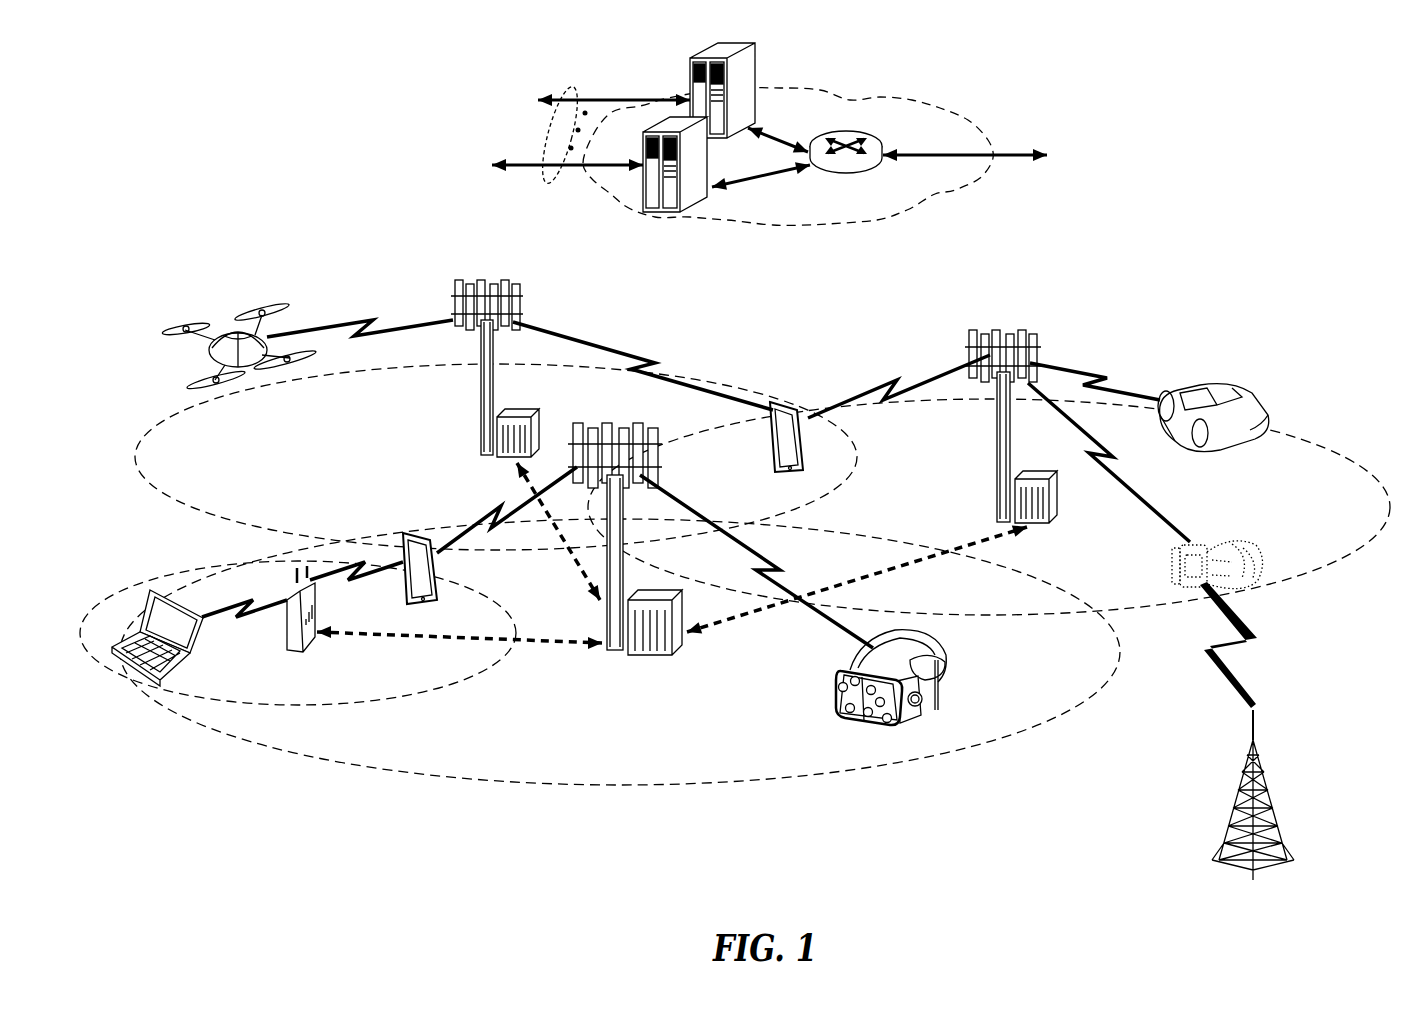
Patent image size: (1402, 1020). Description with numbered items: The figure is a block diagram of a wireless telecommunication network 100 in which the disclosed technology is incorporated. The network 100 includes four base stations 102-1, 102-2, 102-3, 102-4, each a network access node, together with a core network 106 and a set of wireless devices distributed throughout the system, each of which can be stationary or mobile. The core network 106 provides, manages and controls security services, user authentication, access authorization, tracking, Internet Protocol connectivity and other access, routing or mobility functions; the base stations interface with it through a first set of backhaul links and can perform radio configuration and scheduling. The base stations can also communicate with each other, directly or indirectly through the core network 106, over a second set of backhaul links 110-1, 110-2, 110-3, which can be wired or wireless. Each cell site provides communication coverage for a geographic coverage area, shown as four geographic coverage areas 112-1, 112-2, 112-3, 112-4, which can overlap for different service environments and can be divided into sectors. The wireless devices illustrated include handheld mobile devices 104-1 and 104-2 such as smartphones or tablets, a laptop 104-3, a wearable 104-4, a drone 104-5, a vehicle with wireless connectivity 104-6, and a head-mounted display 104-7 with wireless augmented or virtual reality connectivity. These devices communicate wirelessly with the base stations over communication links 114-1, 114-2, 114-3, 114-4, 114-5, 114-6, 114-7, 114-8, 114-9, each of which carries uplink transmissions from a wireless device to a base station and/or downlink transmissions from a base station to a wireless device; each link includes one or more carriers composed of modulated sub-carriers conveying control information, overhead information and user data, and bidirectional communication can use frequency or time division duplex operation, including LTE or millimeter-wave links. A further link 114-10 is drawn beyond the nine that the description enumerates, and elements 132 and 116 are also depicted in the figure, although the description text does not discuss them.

The wireless telecommunication network 100 is at (1285, 148).
The antenna / beam 132 is at (549, 172).
The core network 106 is at (876, 220).
The base station 102-1 is at (612, 655).
The base station 102-2 is at (478, 407).
The base station 102-3 is at (996, 442).
The base station 102-4 is at (287, 636).
The handheld mobile device 104-1 is at (438, 582).
The handheld mobile device 104-2 is at (772, 440).
The laptop 104-3 is at (137, 682).
The wearable 104-4 is at (1194, 543).
The drone 104-5 is at (248, 373).
The vehicle with wireless connectivity 104-6 is at (1240, 390).
The head-mounted display 104-7 is at (948, 663).
The backhaul link 110-1 is at (353, 640).
The backhaul link 110-2 is at (918, 565).
The backhaul link 110-3 is at (577, 562).
The geographic coverage area 112-1 is at (555, 786).
The geographic coverage area 112-2 is at (420, 695).
The geographic coverage area 112-3 is at (198, 512).
The geographic coverage area 112-4 is at (1293, 438).
The communication link 114-1 is at (780, 568).
The communication link 114-2 is at (510, 505).
The communication link 114-3 is at (213, 614).
The communication link 114-4 is at (363, 580).
The communication link 114-5 is at (367, 323).
The communication link 114-6 is at (653, 363).
The communication link 114-7 is at (882, 386).
The communication link 114-8 is at (1120, 476).
The communication link 114-9 is at (1093, 372).
The communication link 114-10 is at (1240, 650).
The satellite / broadcast tower 116 is at (1270, 777).